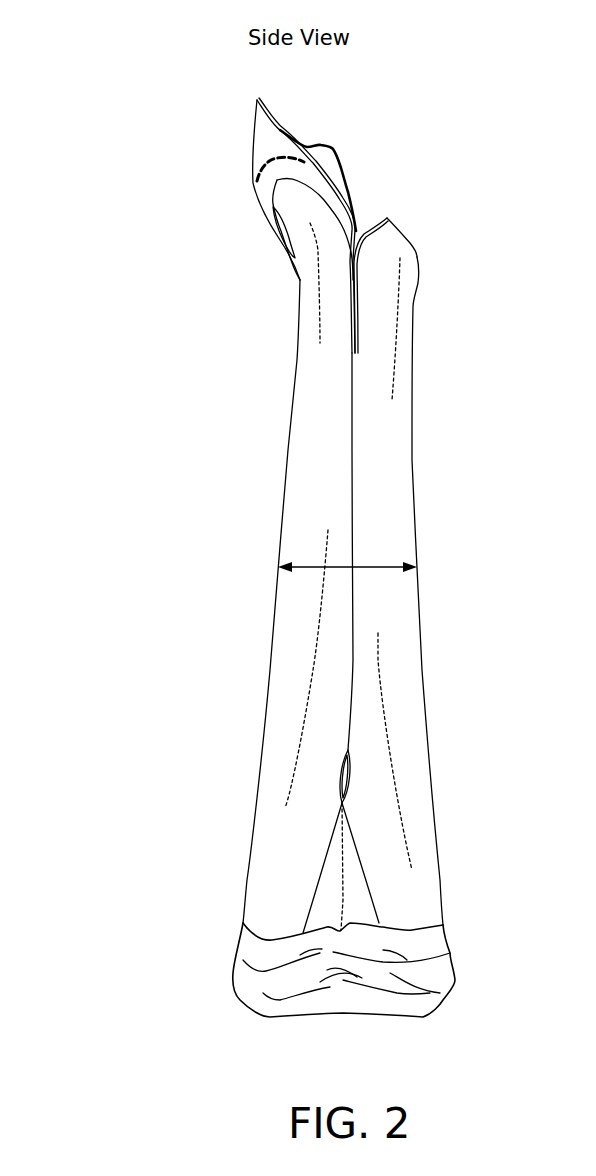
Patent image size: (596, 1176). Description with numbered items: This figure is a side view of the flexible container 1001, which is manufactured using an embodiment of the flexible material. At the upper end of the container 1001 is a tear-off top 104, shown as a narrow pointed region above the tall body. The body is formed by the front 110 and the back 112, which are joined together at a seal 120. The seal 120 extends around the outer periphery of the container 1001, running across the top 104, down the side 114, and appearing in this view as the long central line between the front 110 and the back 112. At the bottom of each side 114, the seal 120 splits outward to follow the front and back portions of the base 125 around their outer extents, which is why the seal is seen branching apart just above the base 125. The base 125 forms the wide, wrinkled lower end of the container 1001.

The flexible container 1001 is at (135, 51).
The tear-off top 104 is at (263, 144).
The front 110 is at (298, 361).
The back 112 is at (411, 431).
The side 114 is at (346, 507).
The seal 120 is at (357, 620).
The base 125 is at (343, 1013).